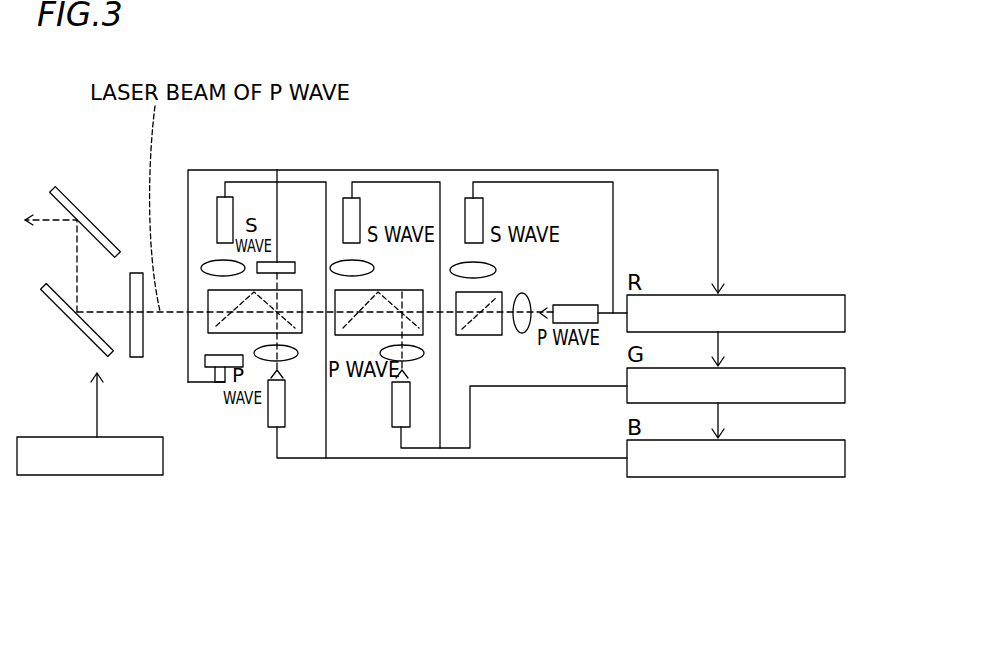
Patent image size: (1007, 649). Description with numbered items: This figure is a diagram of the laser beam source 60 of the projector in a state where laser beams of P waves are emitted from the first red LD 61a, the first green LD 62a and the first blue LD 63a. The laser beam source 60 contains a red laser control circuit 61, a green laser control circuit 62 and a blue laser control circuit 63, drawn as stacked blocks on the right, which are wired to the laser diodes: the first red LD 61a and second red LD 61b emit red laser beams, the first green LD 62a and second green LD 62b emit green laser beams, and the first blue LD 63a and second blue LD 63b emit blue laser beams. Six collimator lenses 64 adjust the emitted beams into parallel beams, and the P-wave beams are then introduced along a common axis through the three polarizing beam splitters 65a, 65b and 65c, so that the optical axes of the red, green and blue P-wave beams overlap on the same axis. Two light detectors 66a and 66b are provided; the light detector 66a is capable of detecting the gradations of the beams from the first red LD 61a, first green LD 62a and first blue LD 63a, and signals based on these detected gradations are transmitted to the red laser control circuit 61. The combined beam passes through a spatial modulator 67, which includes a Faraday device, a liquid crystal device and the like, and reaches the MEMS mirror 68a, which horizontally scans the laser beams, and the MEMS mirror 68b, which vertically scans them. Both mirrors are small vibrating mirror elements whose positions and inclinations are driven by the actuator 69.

The laser beam source 60 is at (735, 143).
The red laser control circuit 61 is at (785, 295).
The green laser control circuit 62 is at (785, 368).
The blue laser control circuit 63 is at (785, 440).
The first red LD 61a is at (590, 305).
The second red LD 61b is at (483, 222).
The first green LD 62a is at (410, 410).
The second green LD 62b is at (360, 222).
The first blue LD 63a is at (285, 405).
The second blue LD 63b is at (234, 222).
The collimator lens 64 is at (210, 261).
The polarizing beam splitter 65a is at (480, 335).
The polarizing beam splitter 65b is at (423, 305).
The polarizing beam splitter 65c is at (302, 305).
The light detector 66a is at (295, 266).
The light detector 66b is at (216, 383).
The spatial modulator 67 is at (137, 273).
The MEMS mirror 68a is at (60, 294).
The MEMS mirror 68b is at (91, 216).
The actuator 69 is at (125, 437).